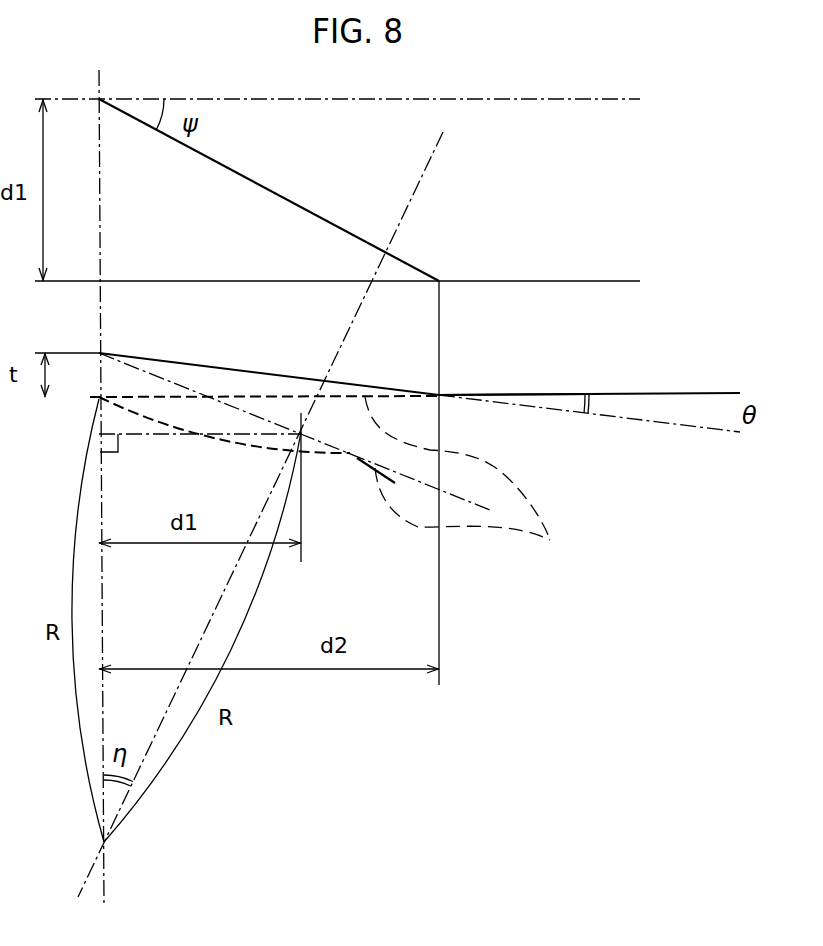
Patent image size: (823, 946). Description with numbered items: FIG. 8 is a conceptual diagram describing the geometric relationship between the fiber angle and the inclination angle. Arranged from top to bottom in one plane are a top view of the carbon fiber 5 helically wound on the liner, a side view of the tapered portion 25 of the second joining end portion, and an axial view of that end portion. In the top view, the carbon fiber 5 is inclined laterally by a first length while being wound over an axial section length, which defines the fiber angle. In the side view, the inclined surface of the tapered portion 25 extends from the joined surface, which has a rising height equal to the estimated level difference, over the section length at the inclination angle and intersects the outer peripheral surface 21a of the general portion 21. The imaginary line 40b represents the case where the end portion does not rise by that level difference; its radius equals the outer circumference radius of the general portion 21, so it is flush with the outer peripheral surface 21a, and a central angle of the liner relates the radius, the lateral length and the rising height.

The carbon fiber 5 is at (282, 196).
The tapered portion 25 is at (235, 367).
The general portion 21 is at (613, 390).
The outer peripheral surface 21a is at (533, 393).
The imaginary line 40b is at (473, 488).